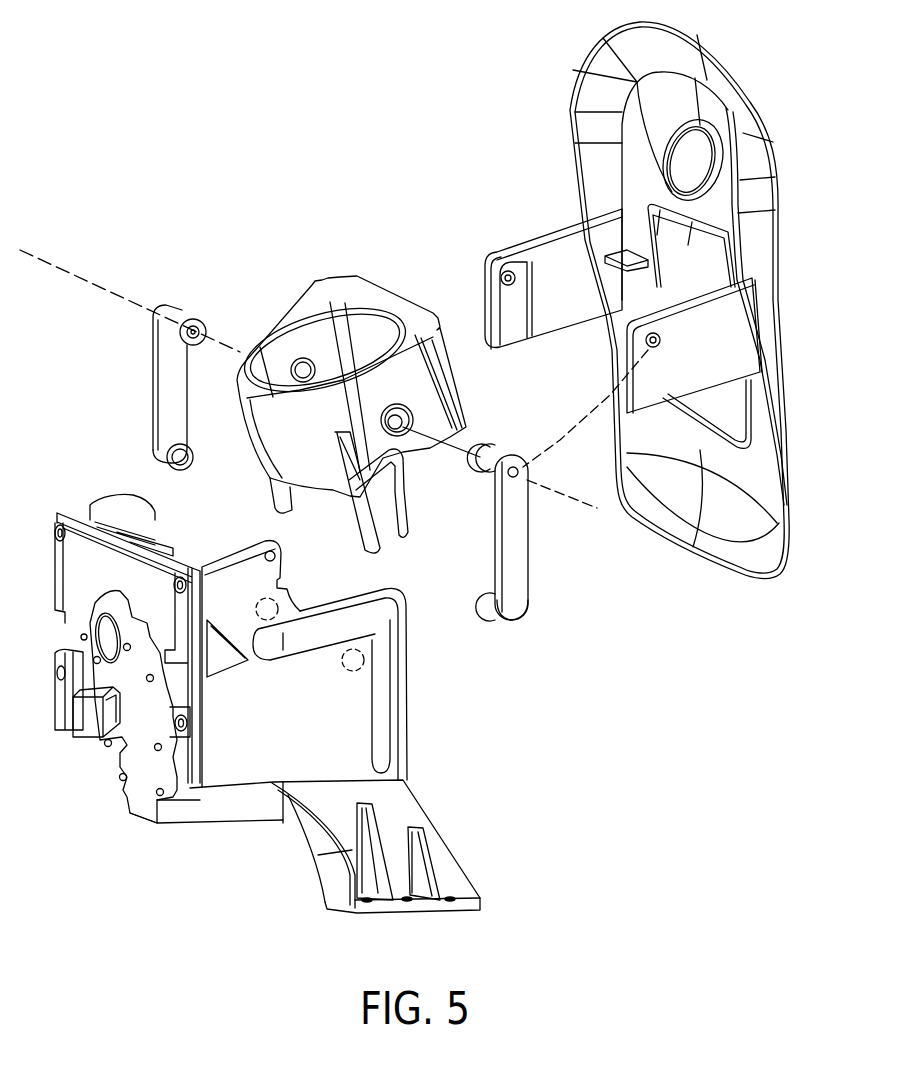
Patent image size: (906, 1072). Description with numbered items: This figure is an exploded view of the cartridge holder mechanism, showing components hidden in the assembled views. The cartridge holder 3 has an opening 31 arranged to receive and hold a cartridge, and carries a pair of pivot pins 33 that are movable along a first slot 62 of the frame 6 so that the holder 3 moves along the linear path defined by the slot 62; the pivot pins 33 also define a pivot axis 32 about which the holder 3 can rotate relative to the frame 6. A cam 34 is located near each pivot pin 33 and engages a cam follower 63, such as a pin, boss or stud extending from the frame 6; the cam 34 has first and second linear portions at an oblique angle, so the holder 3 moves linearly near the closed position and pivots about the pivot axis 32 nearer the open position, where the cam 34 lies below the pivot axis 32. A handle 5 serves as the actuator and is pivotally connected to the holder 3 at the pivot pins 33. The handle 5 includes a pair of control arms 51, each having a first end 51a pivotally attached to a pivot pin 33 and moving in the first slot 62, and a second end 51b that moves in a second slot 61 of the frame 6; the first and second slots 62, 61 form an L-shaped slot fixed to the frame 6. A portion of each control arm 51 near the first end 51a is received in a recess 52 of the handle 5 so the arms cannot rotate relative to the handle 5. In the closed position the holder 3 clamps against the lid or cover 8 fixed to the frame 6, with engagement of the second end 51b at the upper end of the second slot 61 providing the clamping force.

The cartridge holder 3 is at (348, 290).
The handle 5 is at (760, 250).
The frame 6 is at (450, 863).
The lid or cover 8 is at (80, 572).
The opening 31 is at (337, 337).
The pivot axis 32 is at (44, 258).
The pivot pins 33 is at (418, 430).
The cam 34 is at (270, 488).
The control arms 51 is at (172, 397).
The first end 51a is at (497, 463).
The second end 51b is at (513, 613).
The recess 52 is at (510, 300).
The second slot 61 is at (385, 728).
The first slot 62 is at (333, 630).
The cam follower 63 is at (258, 592).